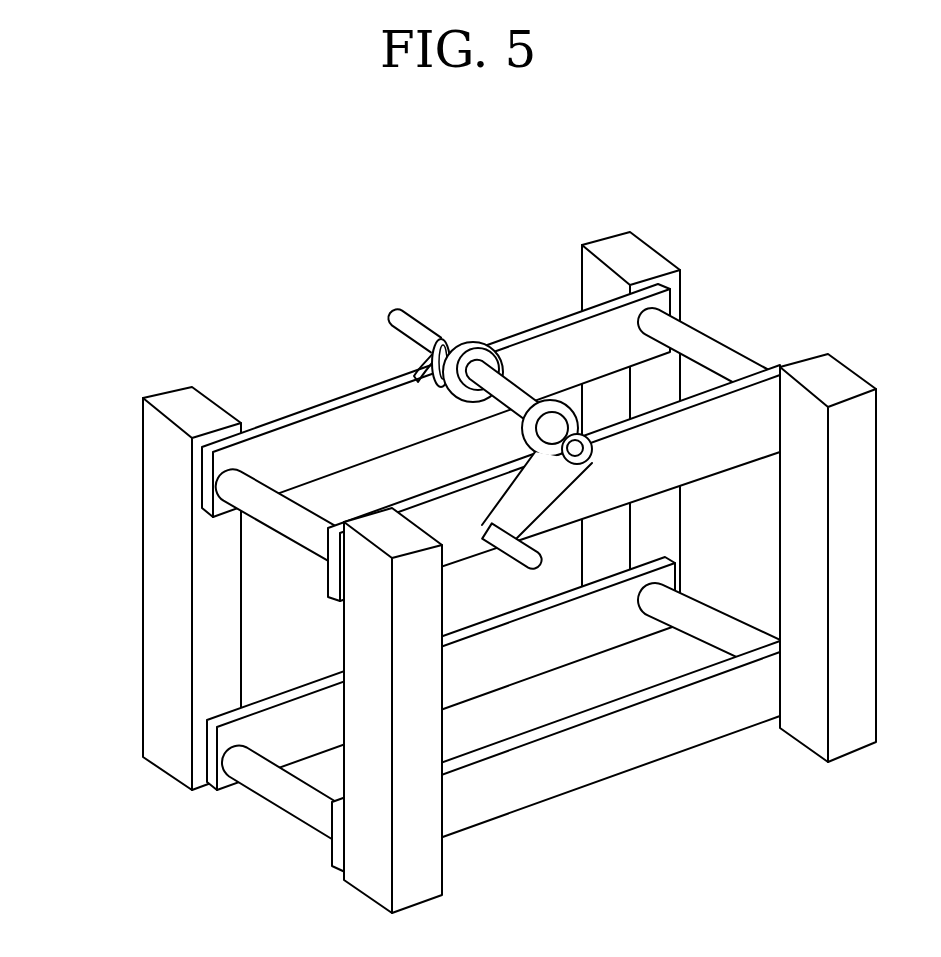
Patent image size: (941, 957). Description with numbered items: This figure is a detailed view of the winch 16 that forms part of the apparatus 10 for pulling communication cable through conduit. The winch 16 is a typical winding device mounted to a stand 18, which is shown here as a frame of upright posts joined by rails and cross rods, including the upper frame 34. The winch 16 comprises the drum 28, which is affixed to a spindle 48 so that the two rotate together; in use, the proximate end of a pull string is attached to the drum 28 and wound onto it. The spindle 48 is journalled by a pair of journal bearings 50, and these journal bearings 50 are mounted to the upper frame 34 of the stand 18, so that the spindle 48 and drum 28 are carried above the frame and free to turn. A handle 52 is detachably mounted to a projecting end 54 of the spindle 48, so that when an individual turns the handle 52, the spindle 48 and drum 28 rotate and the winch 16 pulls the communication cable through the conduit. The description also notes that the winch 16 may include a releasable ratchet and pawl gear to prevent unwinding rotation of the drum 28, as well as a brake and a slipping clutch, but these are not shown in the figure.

The apparatus 10 is at (490, 522).
The winch 16 is at (396, 309).
The stand 18 is at (262, 803).
The drum 28 is at (512, 414).
The upper frame 34 is at (300, 411).
The spindle 48 is at (398, 344).
The journal bearings 50 is at (518, 357).
The handle 52 is at (502, 550).
The projecting end 54 is at (581, 452).